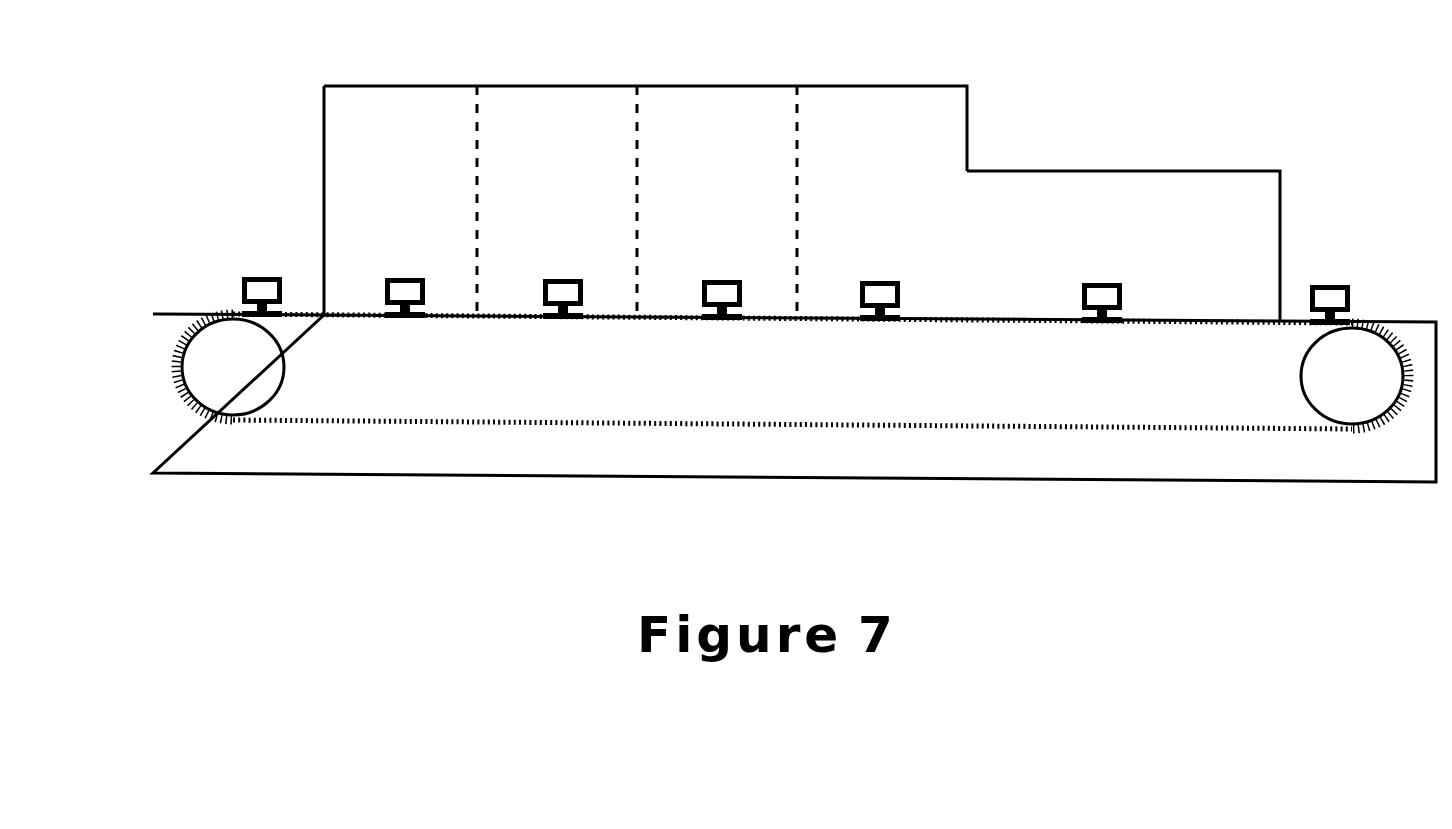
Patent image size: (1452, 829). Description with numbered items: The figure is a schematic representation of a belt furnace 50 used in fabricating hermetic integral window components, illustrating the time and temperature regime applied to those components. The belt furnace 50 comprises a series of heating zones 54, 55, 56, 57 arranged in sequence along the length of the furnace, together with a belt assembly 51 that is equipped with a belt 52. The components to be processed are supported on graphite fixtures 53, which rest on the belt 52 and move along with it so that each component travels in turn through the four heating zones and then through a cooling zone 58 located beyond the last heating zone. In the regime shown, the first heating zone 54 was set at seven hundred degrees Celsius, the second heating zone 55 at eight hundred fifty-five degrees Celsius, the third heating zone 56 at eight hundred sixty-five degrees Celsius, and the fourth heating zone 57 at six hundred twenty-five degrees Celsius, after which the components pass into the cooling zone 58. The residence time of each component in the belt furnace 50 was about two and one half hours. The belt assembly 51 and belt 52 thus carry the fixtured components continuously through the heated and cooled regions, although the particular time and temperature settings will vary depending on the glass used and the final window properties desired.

The belt furnace 50 is at (763, 162).
The belt assembly 51 is at (152, 392).
The belt 52 is at (880, 422).
The graphite fixtures 53 is at (258, 278).
The heating zone 54 is at (420, 86).
The heating zone 55 is at (572, 86).
The heating zone 56 is at (720, 86).
The heating zone 57 is at (870, 86).
The cooling zone 58 is at (1123, 171).